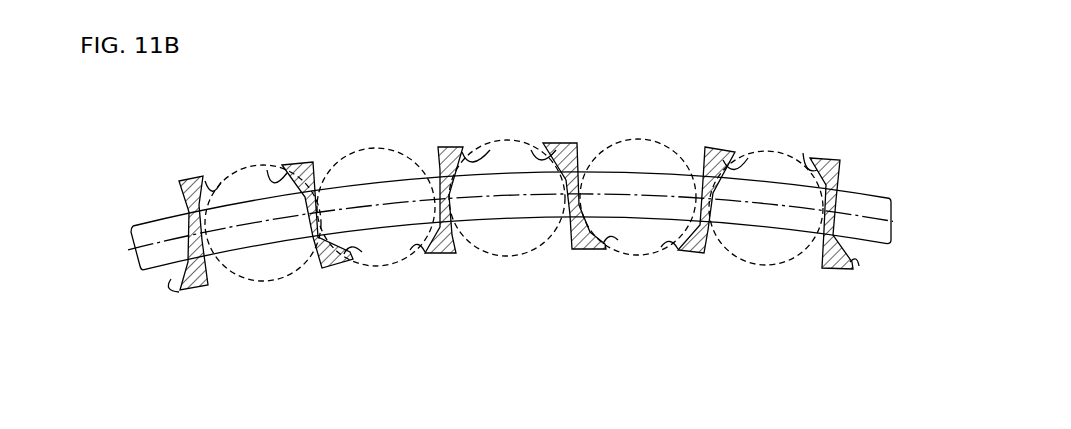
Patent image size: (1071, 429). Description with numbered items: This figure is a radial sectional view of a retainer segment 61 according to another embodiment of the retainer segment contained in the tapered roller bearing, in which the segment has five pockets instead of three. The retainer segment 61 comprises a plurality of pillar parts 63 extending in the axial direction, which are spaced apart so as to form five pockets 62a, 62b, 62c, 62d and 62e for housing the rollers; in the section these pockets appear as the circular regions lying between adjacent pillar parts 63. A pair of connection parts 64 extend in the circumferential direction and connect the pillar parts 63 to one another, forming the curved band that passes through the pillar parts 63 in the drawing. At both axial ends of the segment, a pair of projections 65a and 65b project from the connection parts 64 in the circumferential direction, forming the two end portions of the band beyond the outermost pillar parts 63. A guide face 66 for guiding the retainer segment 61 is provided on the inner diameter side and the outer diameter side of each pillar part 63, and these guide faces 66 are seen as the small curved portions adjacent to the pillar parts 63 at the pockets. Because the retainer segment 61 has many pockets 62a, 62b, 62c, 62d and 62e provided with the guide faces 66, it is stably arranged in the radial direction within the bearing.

The retainer segment 61 is at (805, 80).
The pocket 62a is at (275, 253).
The pocket 62b is at (390, 240).
The pocket 62c is at (512, 240).
The pocket 62d is at (635, 233).
The pocket 62e is at (750, 237).
The pillar part 63 is at (187, 178).
The connection part 64 is at (237, 240).
The projection 65a is at (153, 253).
The projection 65b is at (872, 230).
The guide face 66 is at (221, 181).